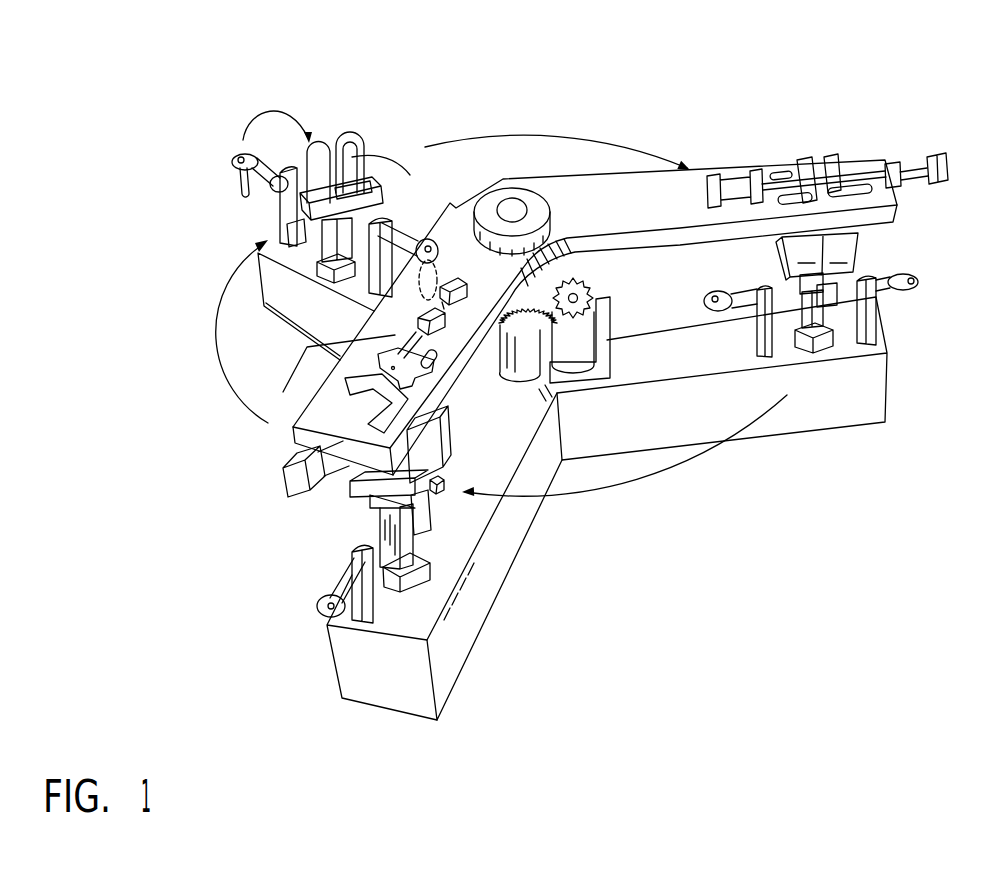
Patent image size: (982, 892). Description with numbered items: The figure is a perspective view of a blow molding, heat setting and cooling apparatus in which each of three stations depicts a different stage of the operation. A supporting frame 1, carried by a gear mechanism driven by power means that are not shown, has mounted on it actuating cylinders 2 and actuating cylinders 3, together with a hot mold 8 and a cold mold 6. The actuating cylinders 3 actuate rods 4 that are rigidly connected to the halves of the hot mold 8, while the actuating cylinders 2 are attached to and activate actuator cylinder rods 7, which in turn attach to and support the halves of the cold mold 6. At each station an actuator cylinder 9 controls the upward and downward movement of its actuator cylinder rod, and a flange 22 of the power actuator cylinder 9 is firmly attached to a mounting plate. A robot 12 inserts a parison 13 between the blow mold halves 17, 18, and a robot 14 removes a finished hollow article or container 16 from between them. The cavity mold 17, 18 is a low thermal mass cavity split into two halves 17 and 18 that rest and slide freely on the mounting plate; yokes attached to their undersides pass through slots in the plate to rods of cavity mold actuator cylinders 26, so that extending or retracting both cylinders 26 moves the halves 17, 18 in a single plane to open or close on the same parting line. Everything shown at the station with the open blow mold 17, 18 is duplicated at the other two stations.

The supporting frame 1 is at (622, 217).
The actuating cylinders 2 is at (908, 158).
The actuating cylinders 3 is at (467, 294).
The rods 4 is at (347, 403).
The cold mold 6 is at (817, 256).
The actuator cylinder rods 7 is at (893, 162).
The hot mold 8 is at (424, 444).
The actuator cylinders 9 is at (318, 248).
The robot 12 is at (233, 162).
The parison 13 is at (240, 196).
The robot 14 is at (427, 228).
The hollow article or container 16 is at (440, 272).
The blow mold half 17 is at (318, 143).
The blow mold half 18 is at (347, 138).
The flange 22 is at (355, 203).
The cavity mold actuator cylinder 26 is at (288, 240).